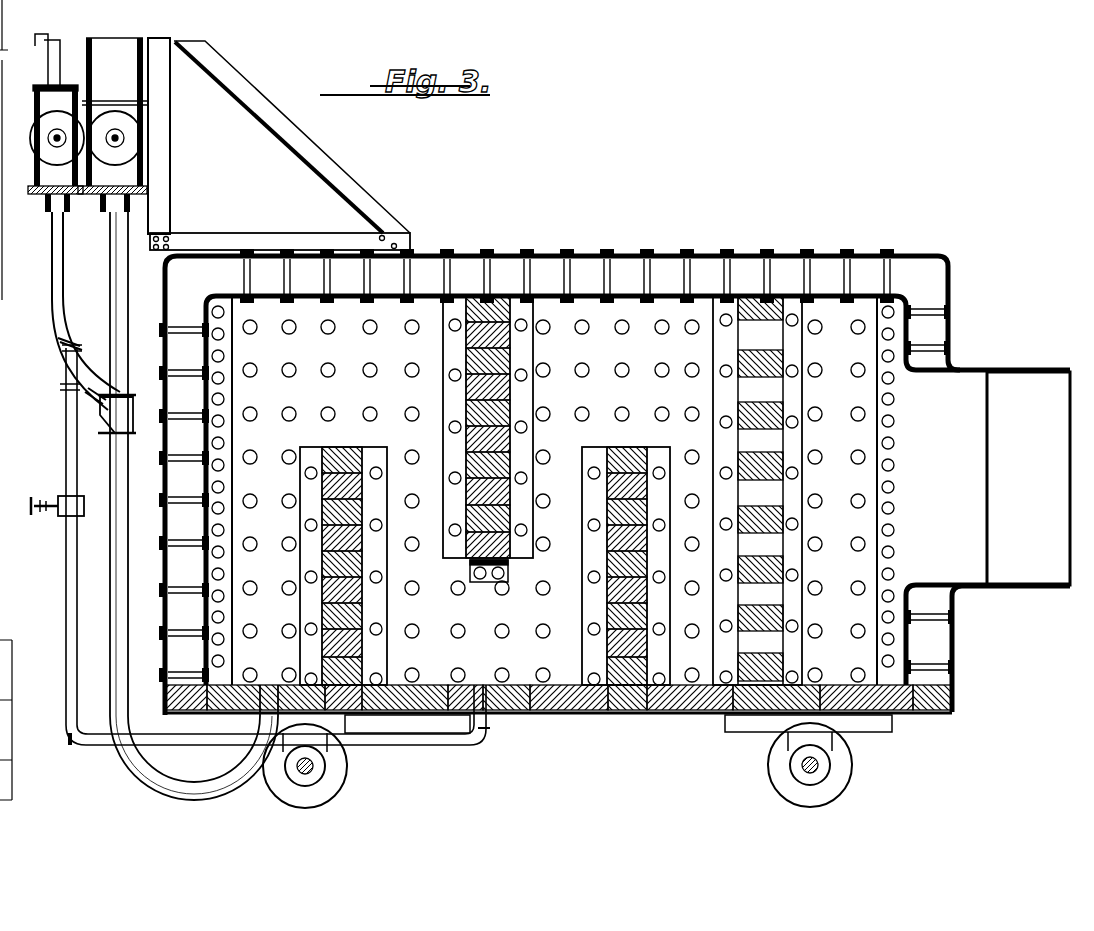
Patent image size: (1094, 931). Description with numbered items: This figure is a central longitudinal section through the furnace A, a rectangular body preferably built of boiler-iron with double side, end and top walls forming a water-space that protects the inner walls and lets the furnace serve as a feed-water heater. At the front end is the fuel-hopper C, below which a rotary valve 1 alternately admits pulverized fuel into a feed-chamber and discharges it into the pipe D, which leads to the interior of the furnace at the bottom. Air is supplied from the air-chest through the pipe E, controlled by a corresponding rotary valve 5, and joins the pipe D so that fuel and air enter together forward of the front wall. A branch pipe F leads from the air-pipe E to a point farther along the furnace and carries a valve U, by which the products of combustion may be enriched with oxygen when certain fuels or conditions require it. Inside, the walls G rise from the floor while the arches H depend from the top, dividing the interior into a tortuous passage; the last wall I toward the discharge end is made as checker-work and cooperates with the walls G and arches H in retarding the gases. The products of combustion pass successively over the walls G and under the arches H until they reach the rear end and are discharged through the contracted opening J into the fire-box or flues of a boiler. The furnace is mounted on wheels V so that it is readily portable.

The furnace A is at (563, 246).
The fuel-hopper C is at (112, 107).
The rotary valve of the fuel-hopper 1 is at (118, 150).
The rotary valve of the air-chest 5 is at (42, 143).
The pipe D is at (110, 290).
The pipe E is at (52, 283).
The branch pipe F is at (66, 594).
The valve U is at (62, 500).
The wall G is at (360, 456).
The arch H is at (468, 395).
The last wall I is at (750, 420).
The contracted opening J is at (1048, 446).
The wheel V is at (330, 768).